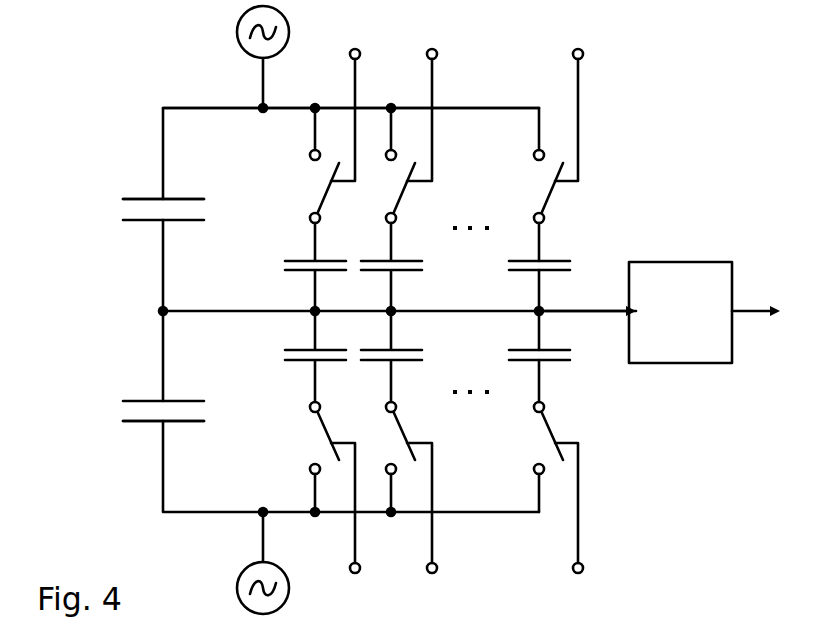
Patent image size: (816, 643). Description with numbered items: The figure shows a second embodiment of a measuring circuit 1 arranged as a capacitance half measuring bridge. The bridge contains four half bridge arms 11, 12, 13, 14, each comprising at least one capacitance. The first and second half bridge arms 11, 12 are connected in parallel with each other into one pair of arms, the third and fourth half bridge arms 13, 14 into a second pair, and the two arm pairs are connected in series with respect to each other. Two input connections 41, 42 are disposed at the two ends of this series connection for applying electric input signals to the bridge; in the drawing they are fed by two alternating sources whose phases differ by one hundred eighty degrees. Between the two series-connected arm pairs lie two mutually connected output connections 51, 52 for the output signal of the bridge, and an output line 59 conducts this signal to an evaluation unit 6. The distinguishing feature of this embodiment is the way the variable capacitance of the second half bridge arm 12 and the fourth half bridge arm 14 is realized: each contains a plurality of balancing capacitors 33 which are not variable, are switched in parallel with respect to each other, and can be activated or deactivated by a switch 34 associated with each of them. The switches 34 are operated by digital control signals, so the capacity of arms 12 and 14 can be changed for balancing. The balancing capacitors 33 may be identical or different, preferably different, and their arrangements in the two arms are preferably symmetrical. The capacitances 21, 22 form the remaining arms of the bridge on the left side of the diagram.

The measuring circuit 1 is at (682, 82).
The evaluation unit 6 is at (675, 262).
The first half bridge arm 11 is at (96, 211).
The second half bridge arm 12 is at (702, 205).
The third half bridge arm 13 is at (96, 409).
The fourth half bridge arm 14 is at (680, 421).
The first capacitor 21 is at (189, 199).
The second capacitor 22 is at (182, 421).
The balancing capacitor 33 is at (556, 262).
The switch 34 is at (546, 196).
The input connection 41 is at (263, 113).
The input connection 42 is at (263, 507).
The output connection 51 is at (158, 311).
The output connection 52 is at (536, 307).
The output line 59 is at (597, 314).